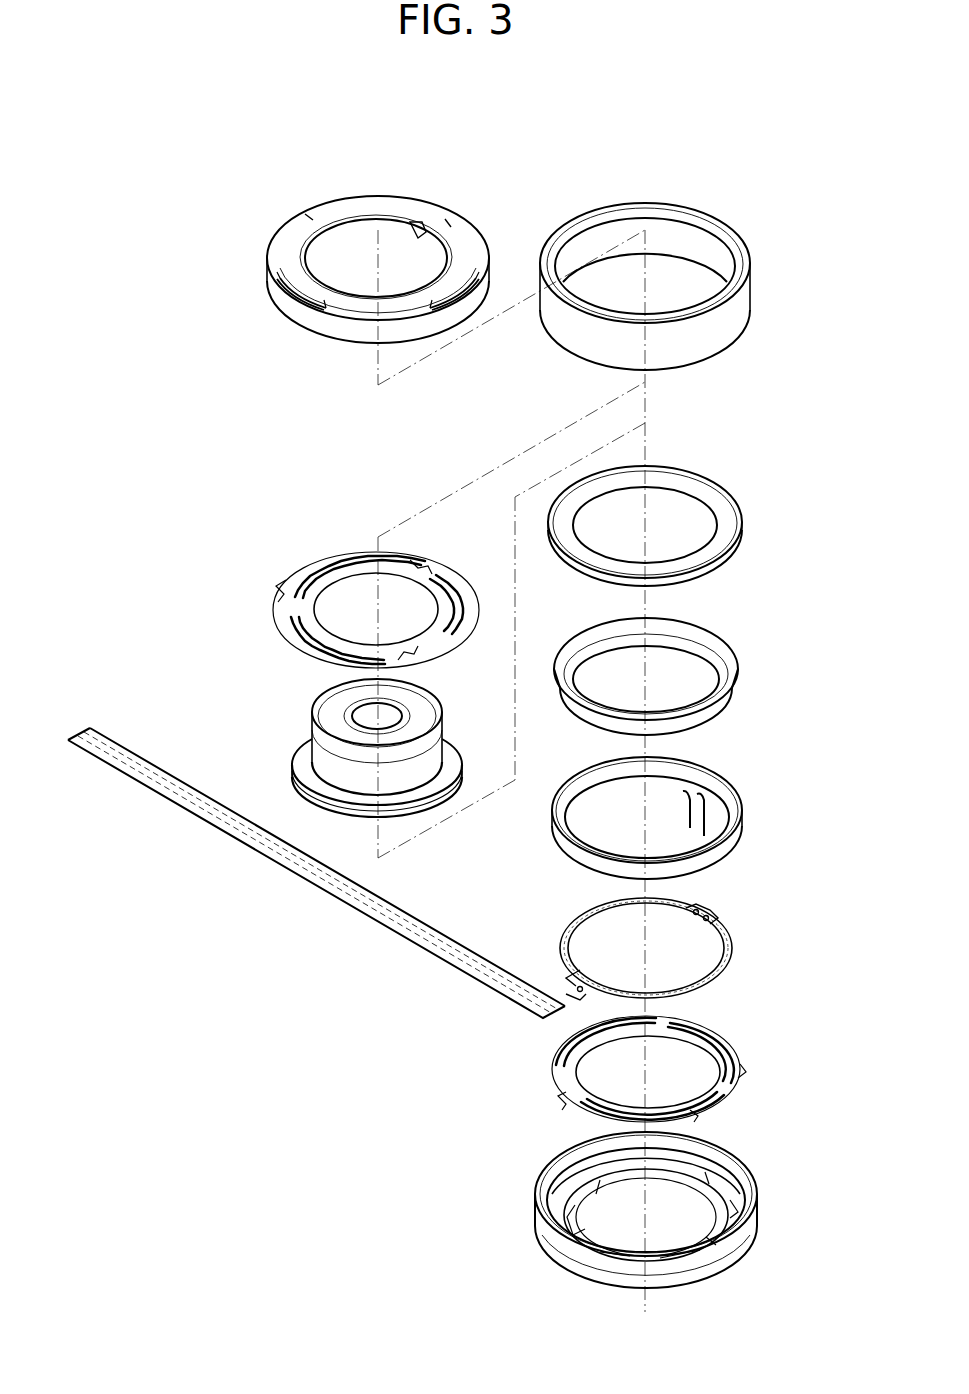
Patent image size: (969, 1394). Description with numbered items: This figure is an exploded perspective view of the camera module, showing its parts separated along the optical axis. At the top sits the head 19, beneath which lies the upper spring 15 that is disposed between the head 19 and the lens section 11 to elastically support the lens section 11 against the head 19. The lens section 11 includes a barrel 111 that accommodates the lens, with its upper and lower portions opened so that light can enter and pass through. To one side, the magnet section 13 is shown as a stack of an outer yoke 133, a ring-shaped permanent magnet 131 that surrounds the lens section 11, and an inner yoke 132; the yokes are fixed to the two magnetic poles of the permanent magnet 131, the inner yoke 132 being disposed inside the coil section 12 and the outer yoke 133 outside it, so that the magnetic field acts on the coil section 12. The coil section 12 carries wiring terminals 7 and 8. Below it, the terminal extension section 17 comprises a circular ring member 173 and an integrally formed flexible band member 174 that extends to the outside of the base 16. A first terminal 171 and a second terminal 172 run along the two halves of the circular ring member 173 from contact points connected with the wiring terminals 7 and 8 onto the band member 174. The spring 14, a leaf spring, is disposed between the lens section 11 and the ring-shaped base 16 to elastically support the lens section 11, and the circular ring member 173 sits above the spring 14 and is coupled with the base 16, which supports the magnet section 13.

The wiring terminal 7 is at (688, 796).
The wiring terminal 8 is at (706, 812).
The lens section 11 is at (337, 739).
The barrel 111 is at (330, 775).
The coil section 12 is at (676, 802).
The magnet section 13 is at (800, 375).
The permanent magnet 131 is at (688, 478).
The inner yoke 132 is at (688, 630).
The outer yoke 133 is at (675, 358).
The spring 14 is at (712, 1032).
The upper spring 15 is at (300, 575).
The base 16 is at (725, 1152).
The terminal extension section 17 is at (441, 850).
The first terminal 171 is at (312, 850).
The second terminal 172 is at (100, 758).
The circular ring member 173 is at (565, 935).
The band member 174 is at (395, 948).
The head 19 is at (330, 330).